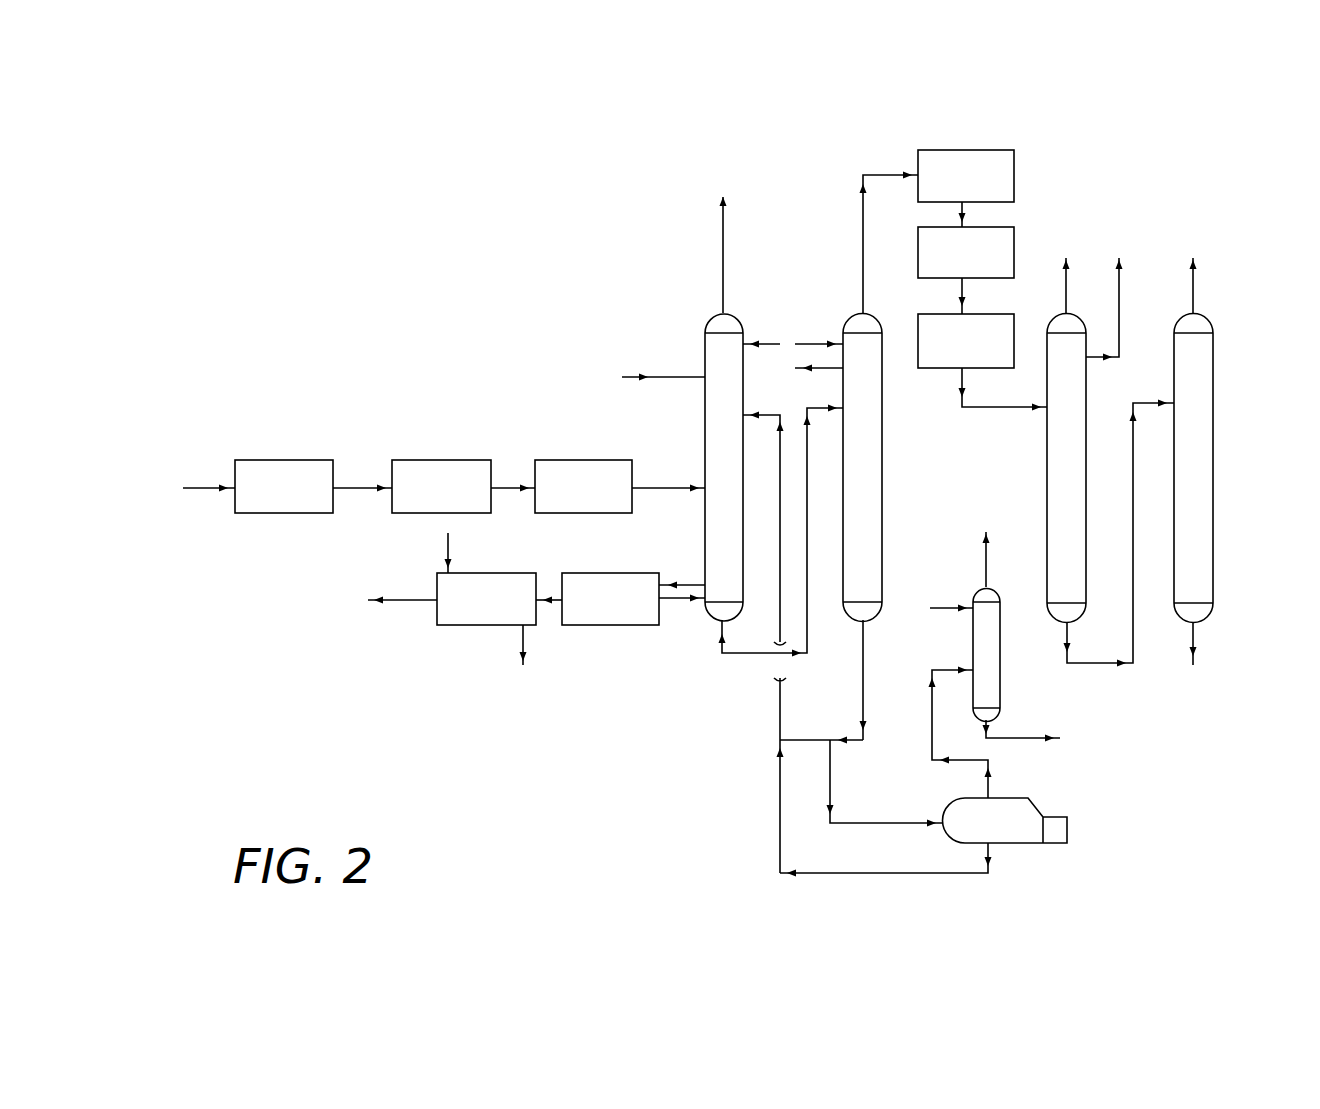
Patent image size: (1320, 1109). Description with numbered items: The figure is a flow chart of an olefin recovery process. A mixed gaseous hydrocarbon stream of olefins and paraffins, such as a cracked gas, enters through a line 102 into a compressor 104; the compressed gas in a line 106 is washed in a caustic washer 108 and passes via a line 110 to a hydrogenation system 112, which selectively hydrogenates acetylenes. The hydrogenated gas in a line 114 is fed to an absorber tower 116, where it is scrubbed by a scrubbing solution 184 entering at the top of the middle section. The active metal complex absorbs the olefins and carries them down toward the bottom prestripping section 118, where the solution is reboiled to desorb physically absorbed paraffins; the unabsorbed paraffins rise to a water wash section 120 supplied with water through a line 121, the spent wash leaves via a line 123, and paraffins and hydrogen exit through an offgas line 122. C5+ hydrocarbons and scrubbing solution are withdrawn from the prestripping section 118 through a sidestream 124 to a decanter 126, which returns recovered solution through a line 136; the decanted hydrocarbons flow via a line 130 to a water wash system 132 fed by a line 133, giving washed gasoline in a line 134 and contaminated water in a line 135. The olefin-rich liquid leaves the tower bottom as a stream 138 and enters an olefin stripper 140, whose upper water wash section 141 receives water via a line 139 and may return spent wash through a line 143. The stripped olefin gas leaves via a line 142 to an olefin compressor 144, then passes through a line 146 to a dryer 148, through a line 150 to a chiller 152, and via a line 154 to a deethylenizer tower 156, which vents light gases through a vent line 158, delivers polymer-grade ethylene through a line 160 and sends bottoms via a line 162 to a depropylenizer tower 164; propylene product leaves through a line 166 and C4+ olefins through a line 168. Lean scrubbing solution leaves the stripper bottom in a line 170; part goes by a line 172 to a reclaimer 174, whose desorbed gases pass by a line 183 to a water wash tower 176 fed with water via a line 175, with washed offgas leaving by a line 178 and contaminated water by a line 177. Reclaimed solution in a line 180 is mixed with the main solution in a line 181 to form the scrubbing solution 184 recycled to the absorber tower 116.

The line 102 is at (212, 488).
The compressor 104 is at (284, 486).
The line 106 is at (376, 488).
The caustic washer 108 is at (441, 486).
The line 110 is at (520, 488).
The hydrogenation system 112 is at (583, 486).
The line 114 is at (658, 488).
The absorber tower 116 is at (686, 438).
The bottom prestripping section 118 is at (745, 598).
The water wash section 120 is at (705, 355).
The line 121 is at (768, 344).
The offgas line 122 is at (723, 250).
The line 123 is at (658, 375).
The sidestream 124 is at (688, 583).
The decanter 126 is at (610, 599).
The line 130 is at (547, 603).
The water wash system 132 is at (480, 626).
The line 133 is at (448, 552).
The line 134 is at (407, 603).
The line 135 is at (526, 645).
The line 136 is at (687, 603).
The stream 138 is at (740, 658).
The line 139 is at (816, 344).
The olefin stripper 140 is at (882, 480).
The upper water wash section 141 is at (882, 355).
The line 142 is at (863, 243).
The line 143 is at (800, 368).
The olefin compressor 144 is at (966, 176).
The line 146 is at (962, 211).
The dryer 148 is at (966, 252).
The line 150 is at (962, 300).
The chiller 152 is at (966, 341).
The line 154 is at (1002, 408).
The deethylenizer tower 156 is at (1047, 475).
The vent line 158 is at (1062, 294).
The line 160 is at (1119, 295).
The line 162 is at (1097, 665).
The depropylenizer tower 164 is at (1213, 380).
The line 166 is at (1193, 295).
The line 168 is at (1193, 640).
The line 170 is at (863, 660).
The line 172 is at (830, 793).
The reclaimer 174 is at (1010, 797).
The line 175 is at (944, 608).
The water wash tower 176 is at (1000, 615).
The line 177 is at (1020, 738).
The line 178 is at (986, 560).
The line 180 is at (870, 873).
The line 181 is at (813, 740).
The line 183 is at (973, 760).
The scrubbing solution 184 is at (780, 714).